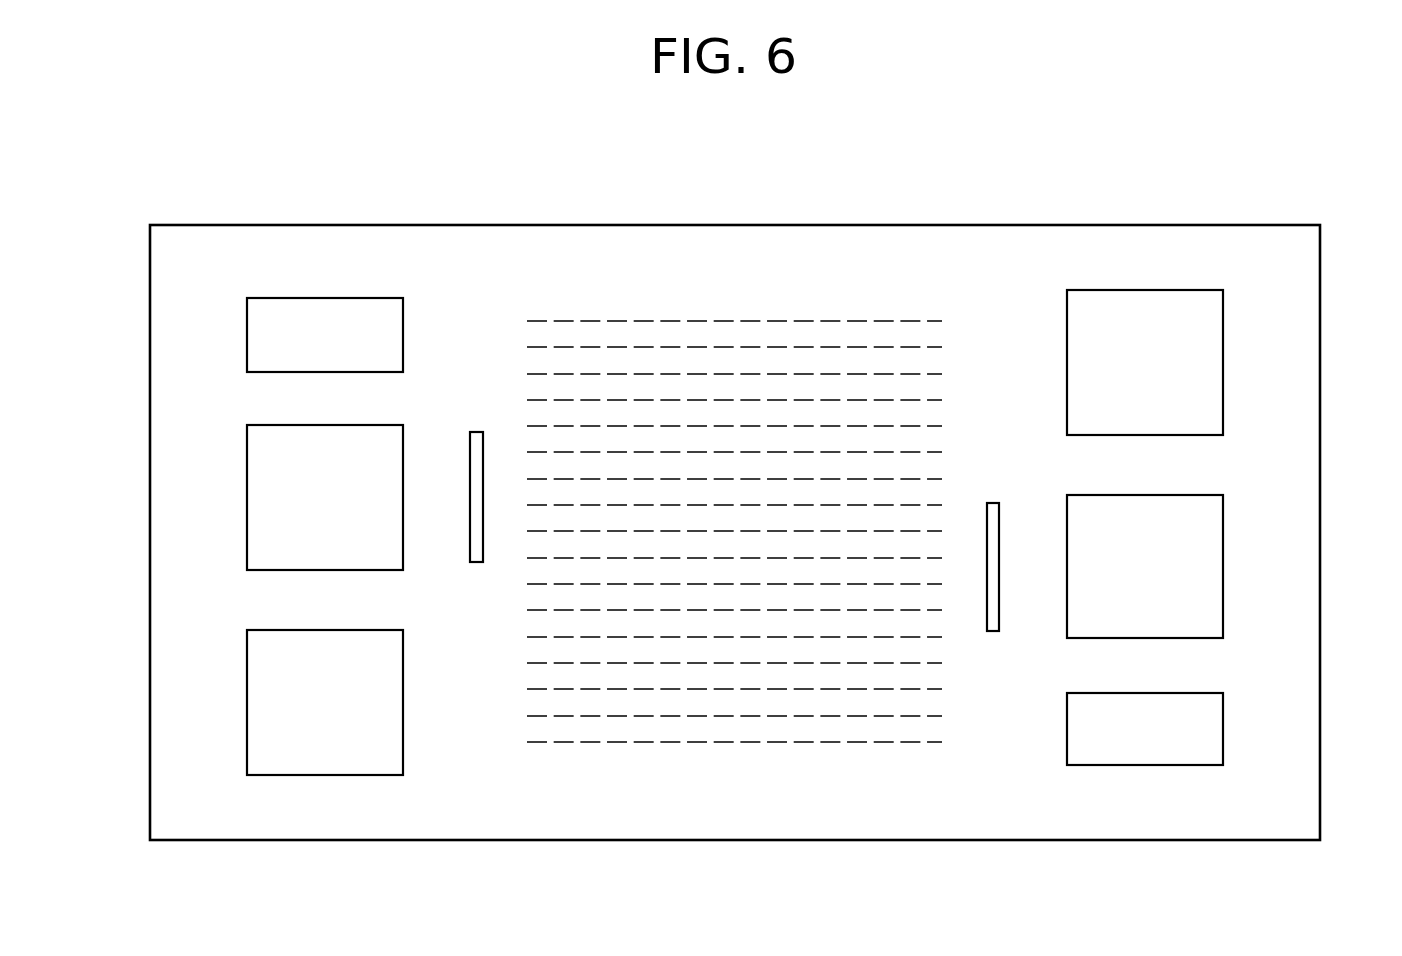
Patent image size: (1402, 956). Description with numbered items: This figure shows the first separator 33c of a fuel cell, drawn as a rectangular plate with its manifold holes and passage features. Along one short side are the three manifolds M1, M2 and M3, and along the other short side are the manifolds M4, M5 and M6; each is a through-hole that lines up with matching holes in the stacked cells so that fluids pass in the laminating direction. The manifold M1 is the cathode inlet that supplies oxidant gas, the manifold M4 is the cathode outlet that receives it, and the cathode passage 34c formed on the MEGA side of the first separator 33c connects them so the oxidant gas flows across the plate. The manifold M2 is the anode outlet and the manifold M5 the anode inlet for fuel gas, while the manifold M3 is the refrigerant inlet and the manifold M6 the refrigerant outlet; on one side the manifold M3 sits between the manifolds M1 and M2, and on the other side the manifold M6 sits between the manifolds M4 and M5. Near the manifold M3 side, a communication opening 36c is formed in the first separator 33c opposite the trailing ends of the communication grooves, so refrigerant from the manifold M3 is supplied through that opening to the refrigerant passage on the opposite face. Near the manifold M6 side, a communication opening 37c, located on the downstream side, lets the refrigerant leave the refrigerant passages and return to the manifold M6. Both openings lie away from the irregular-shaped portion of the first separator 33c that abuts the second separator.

The first separator 33c is at (560, 224).
The cathode passage 34c is at (822, 320).
The communication opening 36c is at (477, 432).
The communication opening 37c is at (997, 633).
The manifold M1 is at (283, 740).
The manifold M2 is at (284, 322).
The manifold M3 is at (270, 510).
The manifold M4 is at (1186, 322).
The manifold M5 is at (1186, 742).
The manifold M6 is at (1197, 567).